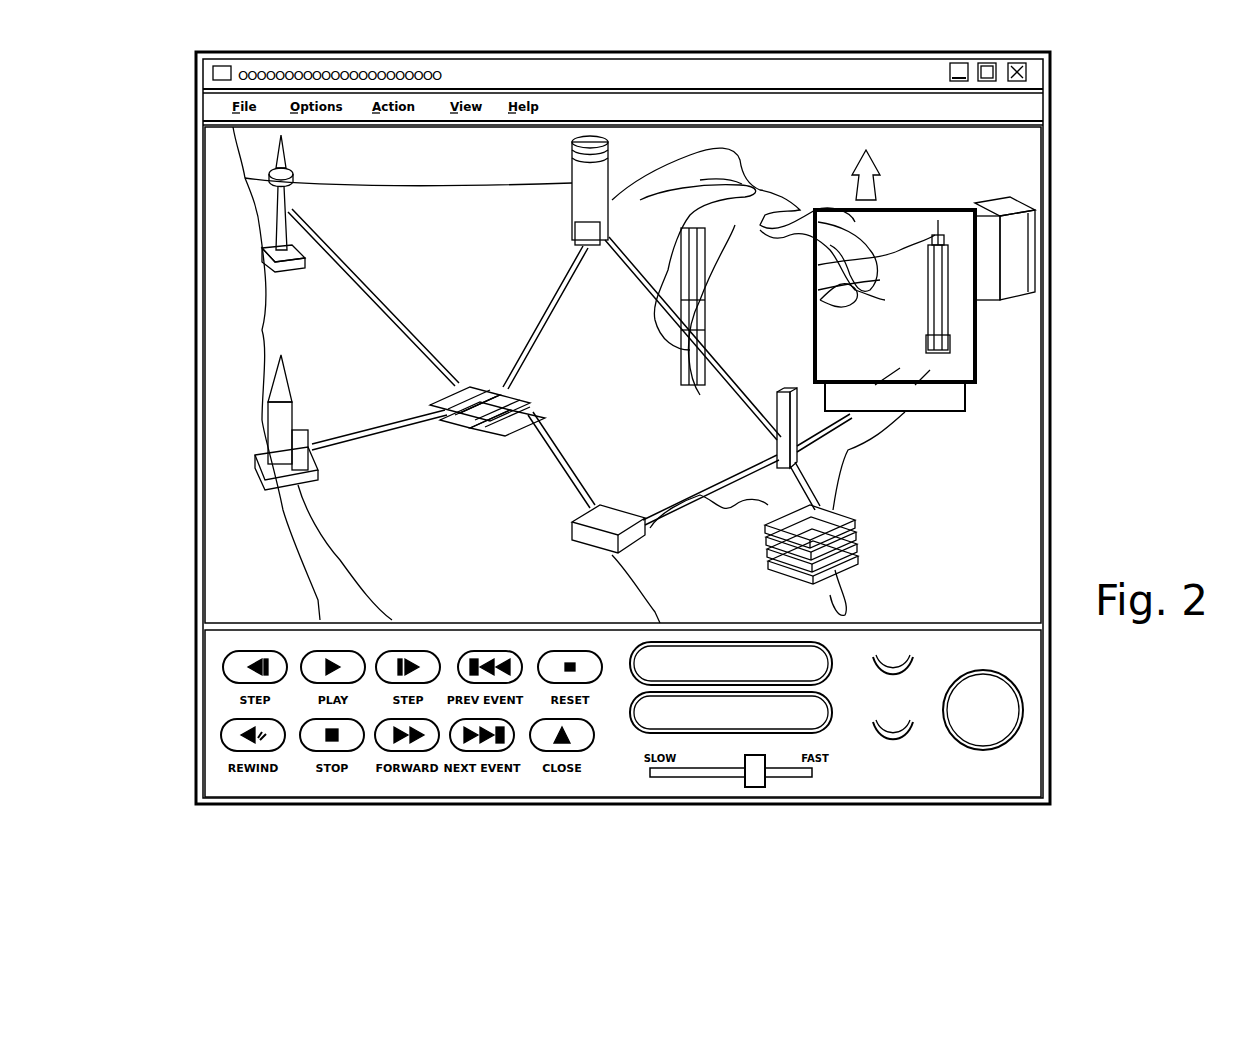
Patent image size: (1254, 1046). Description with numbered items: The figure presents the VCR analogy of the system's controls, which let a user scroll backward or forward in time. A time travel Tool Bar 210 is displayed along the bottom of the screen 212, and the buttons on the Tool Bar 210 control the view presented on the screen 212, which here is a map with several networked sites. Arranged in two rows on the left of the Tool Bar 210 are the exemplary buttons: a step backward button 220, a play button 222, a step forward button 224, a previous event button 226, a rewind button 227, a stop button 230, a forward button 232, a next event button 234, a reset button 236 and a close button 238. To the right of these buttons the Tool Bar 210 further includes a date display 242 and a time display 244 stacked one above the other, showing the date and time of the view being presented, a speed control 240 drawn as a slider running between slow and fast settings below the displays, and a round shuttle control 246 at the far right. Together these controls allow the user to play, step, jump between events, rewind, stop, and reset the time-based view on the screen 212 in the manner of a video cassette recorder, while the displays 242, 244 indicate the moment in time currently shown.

The Tool Bar 210 is at (620, 778).
The screen 212 is at (623, 375).
The step (backward) button 220 is at (228, 662).
The play button 222 is at (335, 650).
The step (forward) button 224 is at (412, 648).
The previous event button 226 is at (490, 650).
The rewind button 227 is at (268, 752).
The stop button 230 is at (345, 752).
The forward button 232 is at (438, 752).
The next event button 234 is at (522, 740).
The reset button 236 is at (570, 650).
The close button 238 is at (586, 745).
The speed control 240 is at (757, 787).
The date display 242 is at (832, 650).
The time display 244 is at (832, 700).
The shuttle control 246 is at (1025, 706).